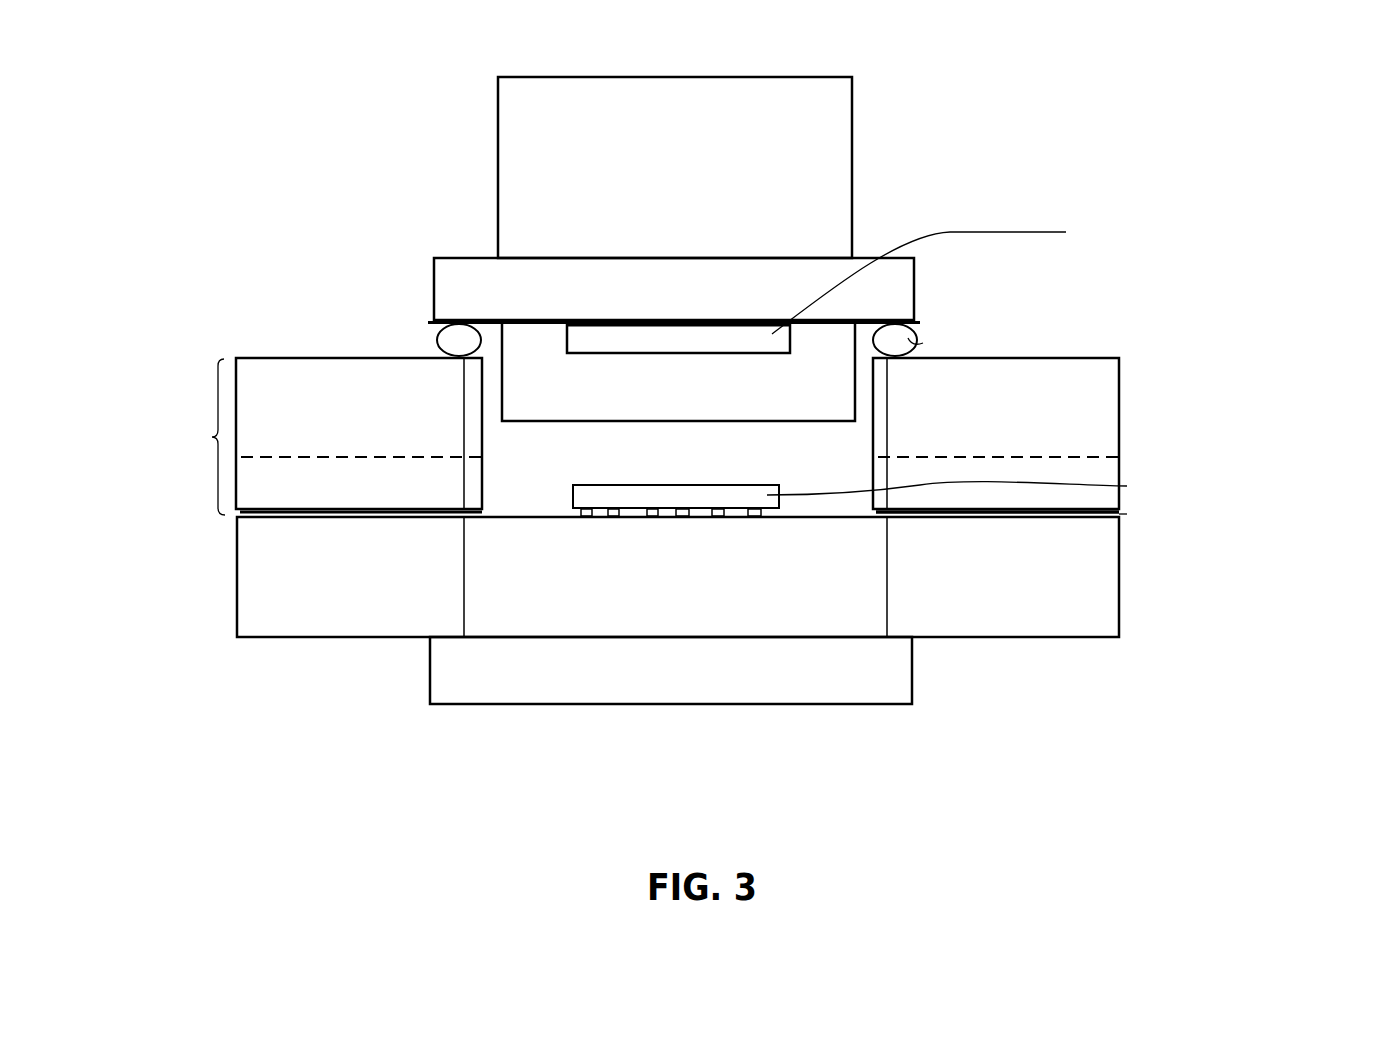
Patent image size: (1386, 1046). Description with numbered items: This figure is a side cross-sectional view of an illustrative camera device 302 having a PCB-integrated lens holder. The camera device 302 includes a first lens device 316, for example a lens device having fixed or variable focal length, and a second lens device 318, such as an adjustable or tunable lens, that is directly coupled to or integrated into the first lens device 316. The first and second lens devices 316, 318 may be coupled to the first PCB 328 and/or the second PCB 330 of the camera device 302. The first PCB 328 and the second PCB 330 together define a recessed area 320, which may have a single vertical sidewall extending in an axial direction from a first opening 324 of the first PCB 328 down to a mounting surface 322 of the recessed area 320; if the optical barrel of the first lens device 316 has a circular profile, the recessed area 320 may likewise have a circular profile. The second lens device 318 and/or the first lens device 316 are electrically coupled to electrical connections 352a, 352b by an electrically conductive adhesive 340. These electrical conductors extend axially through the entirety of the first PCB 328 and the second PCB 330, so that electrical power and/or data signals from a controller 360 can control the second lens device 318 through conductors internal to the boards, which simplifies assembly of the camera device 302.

The camera device 302 is at (266, 170).
The first lens device 316 is at (497, 170).
The second lens device 318 is at (748, 335).
The recessed area 320 is at (885, 468).
The mounting surface 322 is at (540, 532).
The first opening 324 is at (482, 400).
The first PCB 328 is at (189, 437).
The second PCB 330 is at (1119, 578).
The electrically conductive adhesive 340 is at (437, 338).
The electrical connection 352a is at (462, 480).
The electrical connection 352b is at (463, 606).
The controller 360 is at (880, 678).